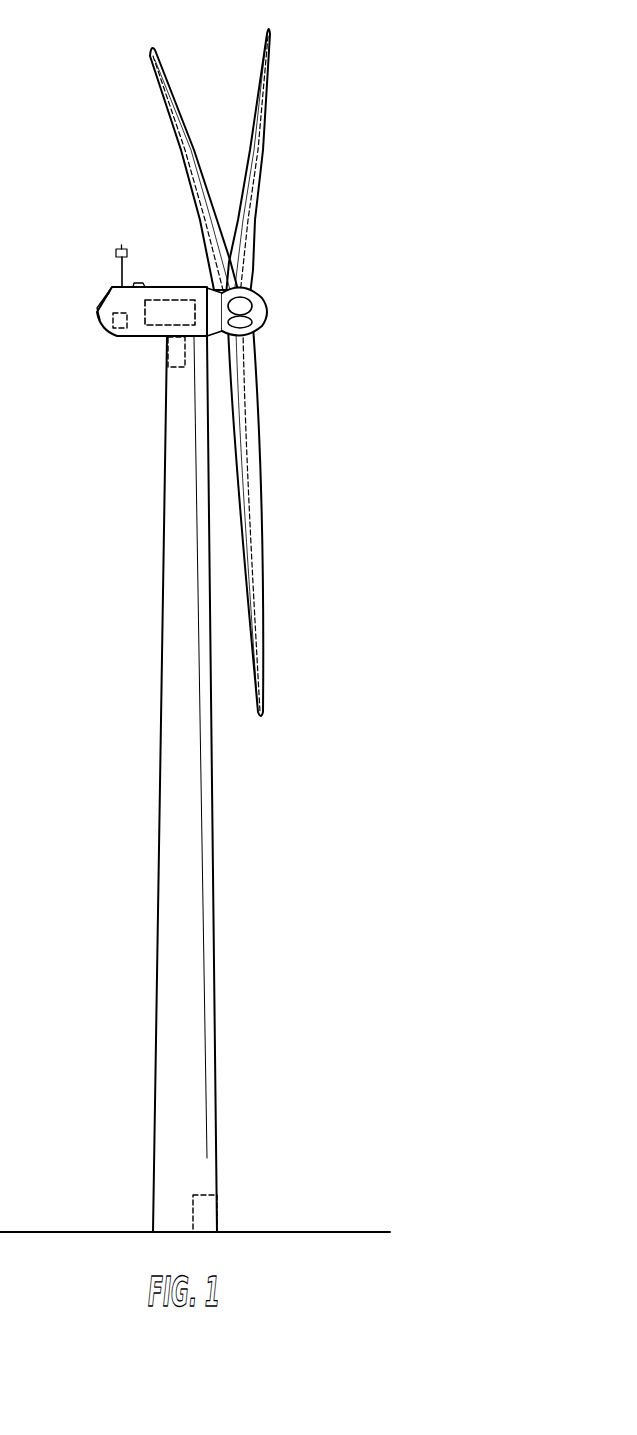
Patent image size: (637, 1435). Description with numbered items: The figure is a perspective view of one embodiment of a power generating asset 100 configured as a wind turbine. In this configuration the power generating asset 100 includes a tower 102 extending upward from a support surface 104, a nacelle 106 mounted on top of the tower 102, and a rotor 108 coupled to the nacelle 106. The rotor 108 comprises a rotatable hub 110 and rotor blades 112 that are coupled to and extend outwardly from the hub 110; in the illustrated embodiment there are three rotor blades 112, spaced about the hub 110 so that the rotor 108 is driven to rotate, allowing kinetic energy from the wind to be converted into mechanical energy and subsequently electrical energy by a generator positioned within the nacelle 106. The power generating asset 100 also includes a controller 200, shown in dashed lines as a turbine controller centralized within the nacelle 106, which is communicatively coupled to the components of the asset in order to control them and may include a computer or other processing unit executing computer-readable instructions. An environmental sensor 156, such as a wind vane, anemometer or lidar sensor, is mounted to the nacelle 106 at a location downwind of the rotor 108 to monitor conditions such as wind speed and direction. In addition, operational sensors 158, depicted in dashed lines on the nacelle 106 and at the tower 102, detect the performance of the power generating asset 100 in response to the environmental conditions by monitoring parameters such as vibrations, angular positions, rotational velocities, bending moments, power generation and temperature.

The power generating asset 100 is at (388, 152).
The tower 102 is at (188, 853).
The support surface 104 is at (110, 1232).
The nacelle 106 is at (133, 337).
The rotor 108 is at (249, 372).
The rotatable hub 110 is at (262, 310).
The rotor blade 112 is at (225, 372).
The environmental sensor 156 is at (118, 274).
The operational sensor 158 is at (100, 325).
The controller 200 is at (175, 297).